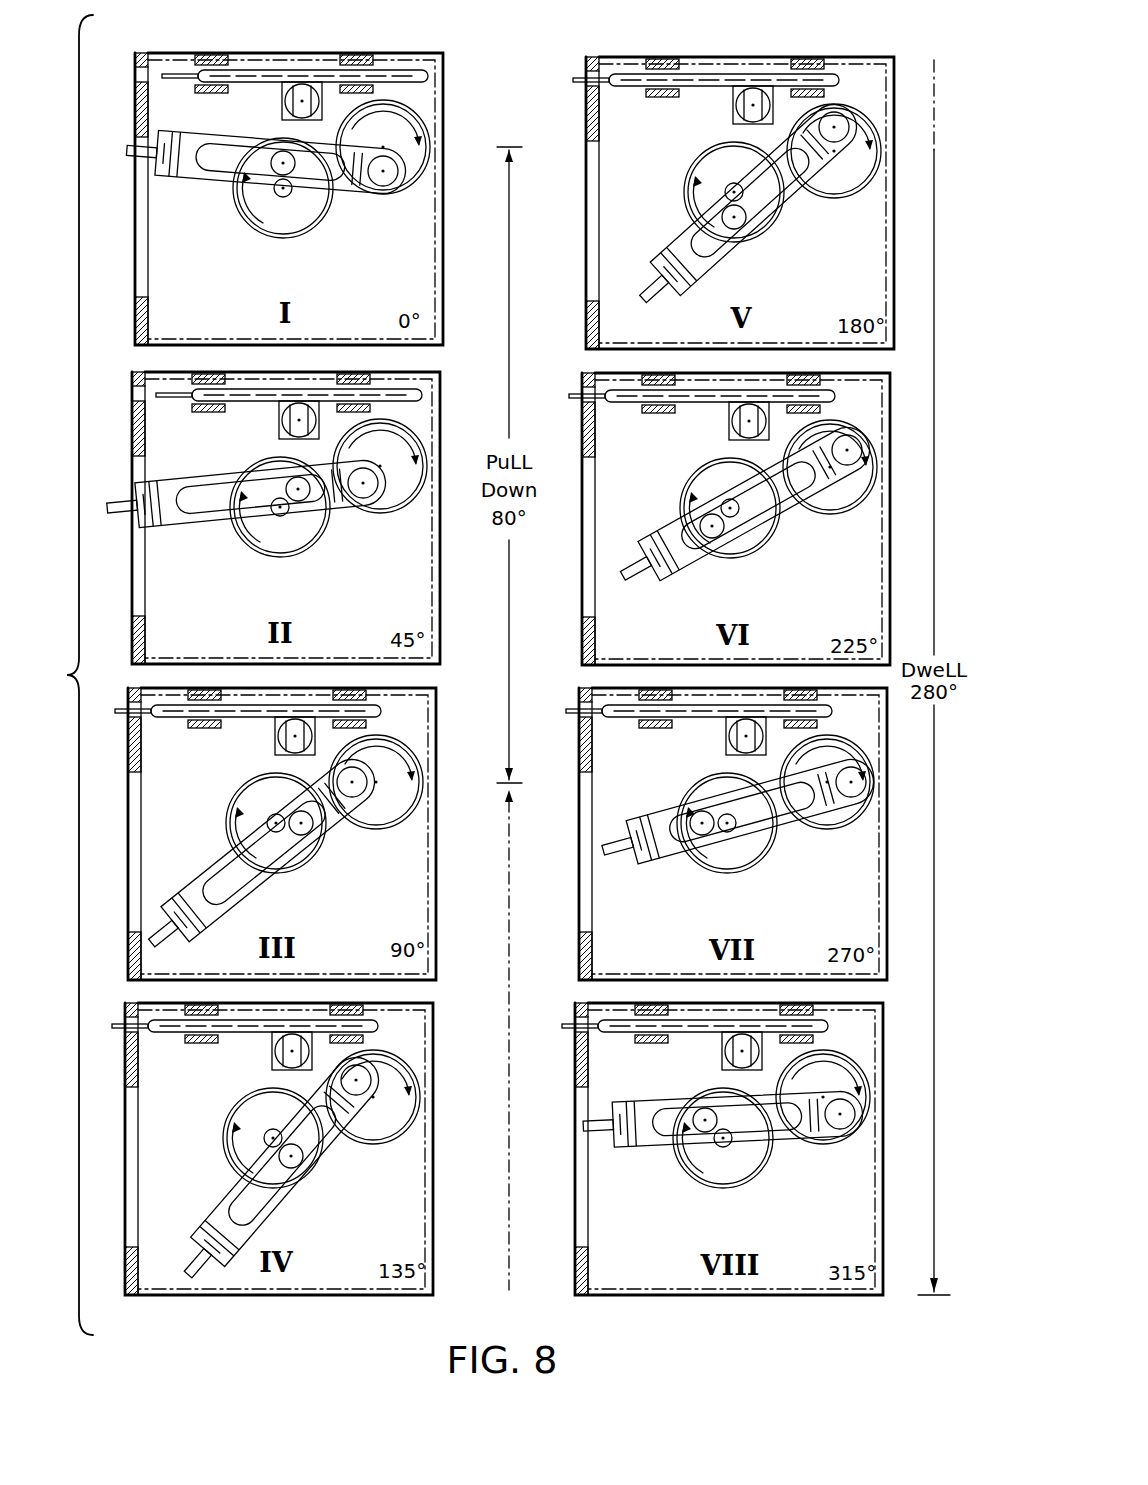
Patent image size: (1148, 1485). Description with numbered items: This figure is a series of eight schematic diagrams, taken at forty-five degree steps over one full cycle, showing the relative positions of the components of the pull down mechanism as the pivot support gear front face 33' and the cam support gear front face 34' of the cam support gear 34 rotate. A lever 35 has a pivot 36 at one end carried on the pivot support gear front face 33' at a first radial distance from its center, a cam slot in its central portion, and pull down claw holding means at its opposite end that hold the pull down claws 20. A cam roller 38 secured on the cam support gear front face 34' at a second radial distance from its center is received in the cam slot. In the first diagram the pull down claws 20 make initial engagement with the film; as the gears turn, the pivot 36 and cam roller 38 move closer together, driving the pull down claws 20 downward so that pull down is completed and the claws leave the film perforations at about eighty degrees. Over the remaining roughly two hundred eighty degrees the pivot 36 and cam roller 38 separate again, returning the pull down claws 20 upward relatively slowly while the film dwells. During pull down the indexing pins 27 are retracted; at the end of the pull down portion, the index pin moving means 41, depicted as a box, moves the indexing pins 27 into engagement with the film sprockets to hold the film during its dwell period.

The pull down claws 20 is at (133, 167).
The indexing pins 27 is at (186, 79).
The pivot support gear front face 33' is at (603, 643).
The cam support gear front face 34' is at (504, 682).
The cam support gear 34 is at (729, 842).
The lever 35 is at (183, 186).
The pivot 36 is at (382, 173).
The cam roller 38 is at (283, 163).
The index pin moving means 41 is at (286, 102).